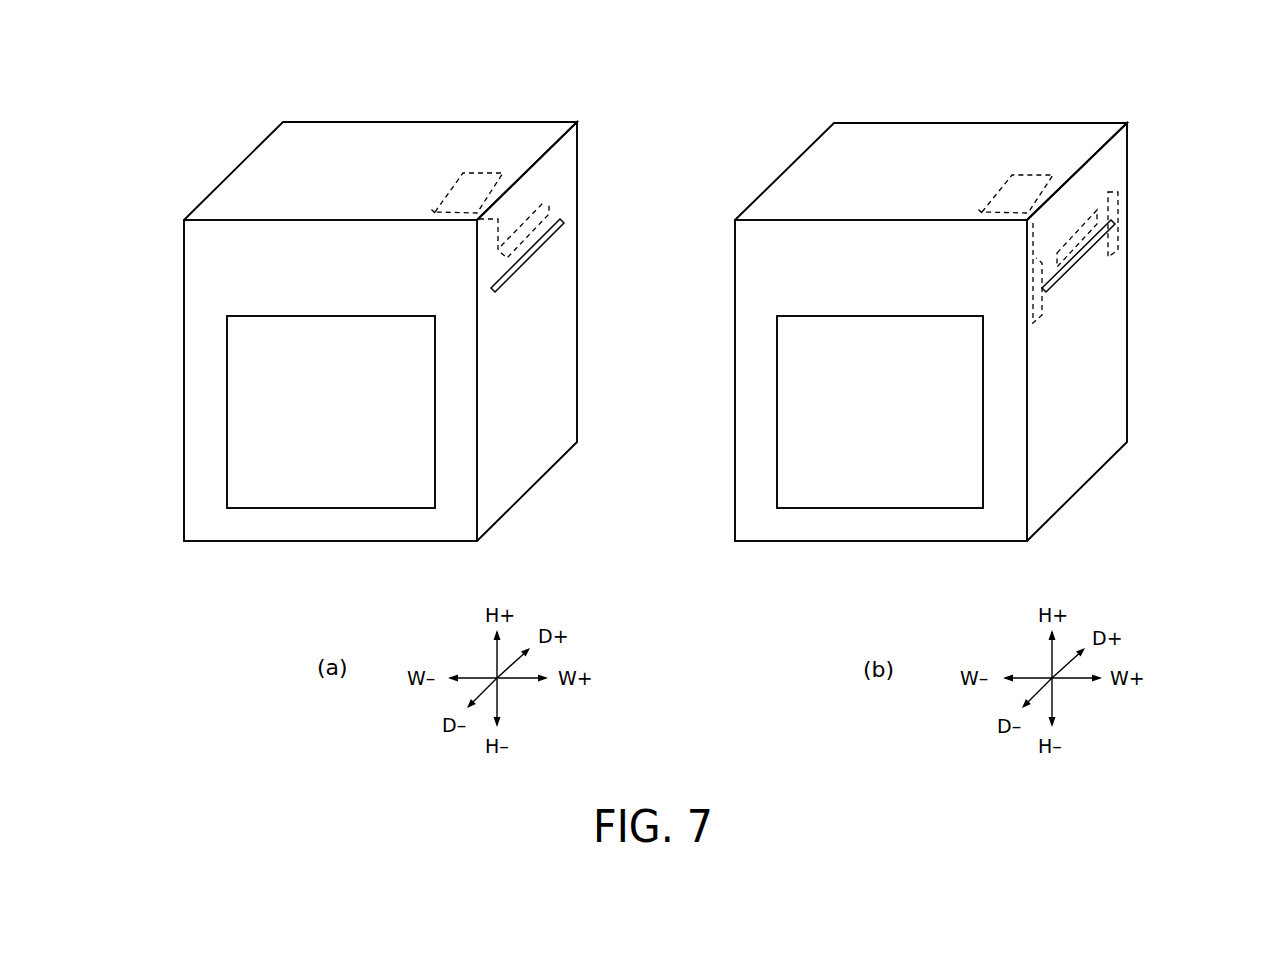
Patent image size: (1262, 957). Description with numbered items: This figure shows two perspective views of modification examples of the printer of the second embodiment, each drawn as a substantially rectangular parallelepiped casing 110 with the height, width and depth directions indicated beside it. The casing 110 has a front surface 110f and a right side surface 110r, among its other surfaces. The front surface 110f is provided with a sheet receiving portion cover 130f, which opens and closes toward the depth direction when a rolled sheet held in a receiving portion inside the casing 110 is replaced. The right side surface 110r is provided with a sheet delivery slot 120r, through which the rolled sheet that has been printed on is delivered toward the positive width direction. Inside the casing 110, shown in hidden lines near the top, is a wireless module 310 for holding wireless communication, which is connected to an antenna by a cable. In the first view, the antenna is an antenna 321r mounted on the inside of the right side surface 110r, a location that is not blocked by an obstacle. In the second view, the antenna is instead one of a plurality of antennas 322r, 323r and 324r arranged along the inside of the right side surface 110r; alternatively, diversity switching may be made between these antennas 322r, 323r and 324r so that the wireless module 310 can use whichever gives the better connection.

The casing 110 is at (287, 180).
The front surface 110f is at (212, 347).
The right side surface 110r is at (528, 365).
The sheet delivery slot 120r is at (528, 258).
The sheet receiving portion cover 130f is at (335, 412).
The wireless module 310 is at (488, 172).
The antenna 321r is at (547, 213).
The antenna 322r is at (1032, 217).
The antenna 323r is at (1097, 210).
The antenna 324r is at (1119, 224).